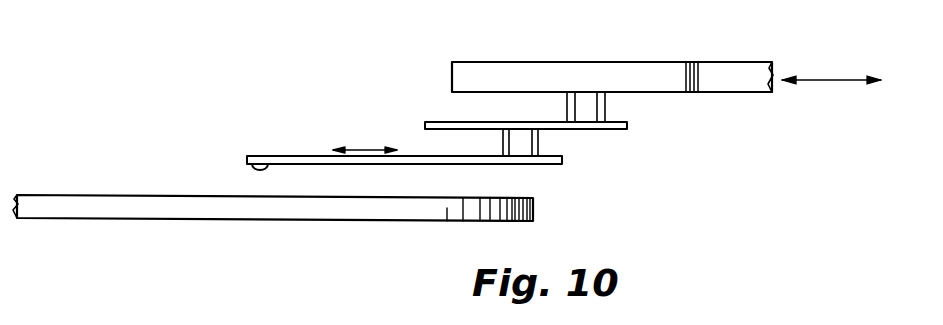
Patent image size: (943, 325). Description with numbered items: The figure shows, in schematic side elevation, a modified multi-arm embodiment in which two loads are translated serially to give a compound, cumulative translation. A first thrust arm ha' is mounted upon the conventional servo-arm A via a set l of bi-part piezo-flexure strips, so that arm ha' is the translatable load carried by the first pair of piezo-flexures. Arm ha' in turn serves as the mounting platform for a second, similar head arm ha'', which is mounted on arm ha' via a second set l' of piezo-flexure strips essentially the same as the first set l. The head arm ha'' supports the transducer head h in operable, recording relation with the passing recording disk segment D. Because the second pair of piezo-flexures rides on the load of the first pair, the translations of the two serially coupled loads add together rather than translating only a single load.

The recording disk segment D is at (77, 195).
The transducer head h is at (258, 169).
The head arm ha'' is at (404, 124).
The first thrust arm ha' is at (494, 94).
The servo-arm A is at (694, 62).
The set of bi-part piezo-flexure strips l is at (624, 112).
The second set of piezo-flexure strips l' is at (579, 151).